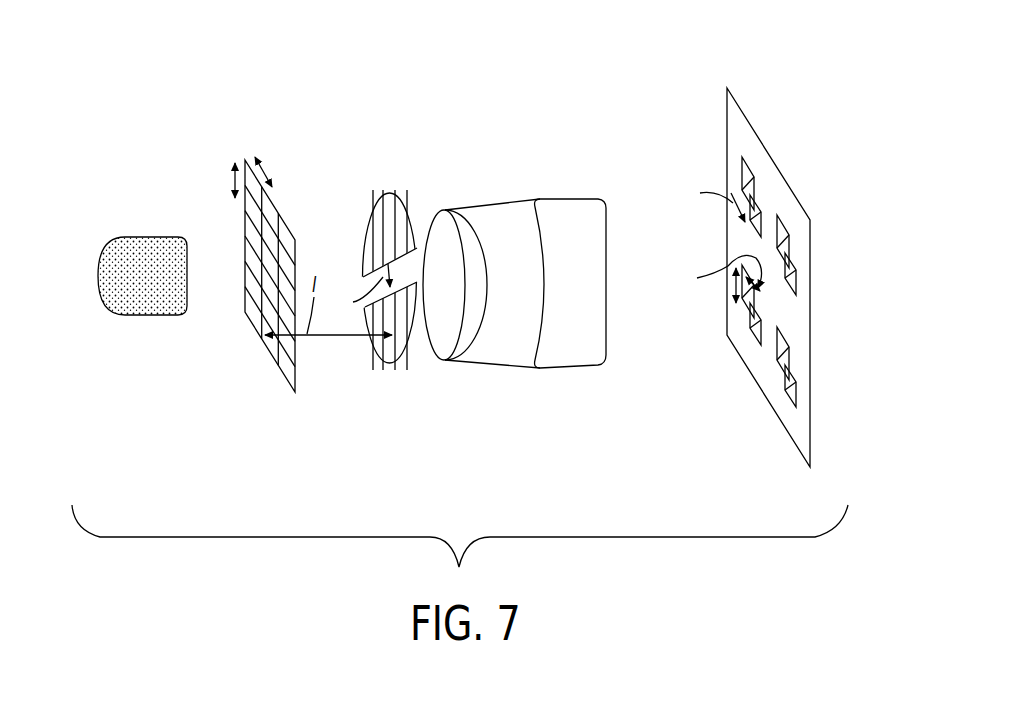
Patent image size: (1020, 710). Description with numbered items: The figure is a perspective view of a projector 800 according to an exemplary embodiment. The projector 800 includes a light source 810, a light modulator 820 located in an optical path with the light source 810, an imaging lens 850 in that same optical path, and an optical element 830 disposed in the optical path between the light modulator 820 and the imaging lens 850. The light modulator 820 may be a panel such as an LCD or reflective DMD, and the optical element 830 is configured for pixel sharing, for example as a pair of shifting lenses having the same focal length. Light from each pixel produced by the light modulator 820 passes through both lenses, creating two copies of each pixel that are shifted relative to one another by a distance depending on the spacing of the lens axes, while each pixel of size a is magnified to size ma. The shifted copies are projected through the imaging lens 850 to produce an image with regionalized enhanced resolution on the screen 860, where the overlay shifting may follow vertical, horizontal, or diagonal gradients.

The projector 800 is at (340, 86).
The light source 810 is at (150, 236).
The light modulator 820 is at (292, 237).
The optical element 830 is at (407, 186).
The imaging lens 850 is at (568, 198).
The screen 860 is at (750, 125).